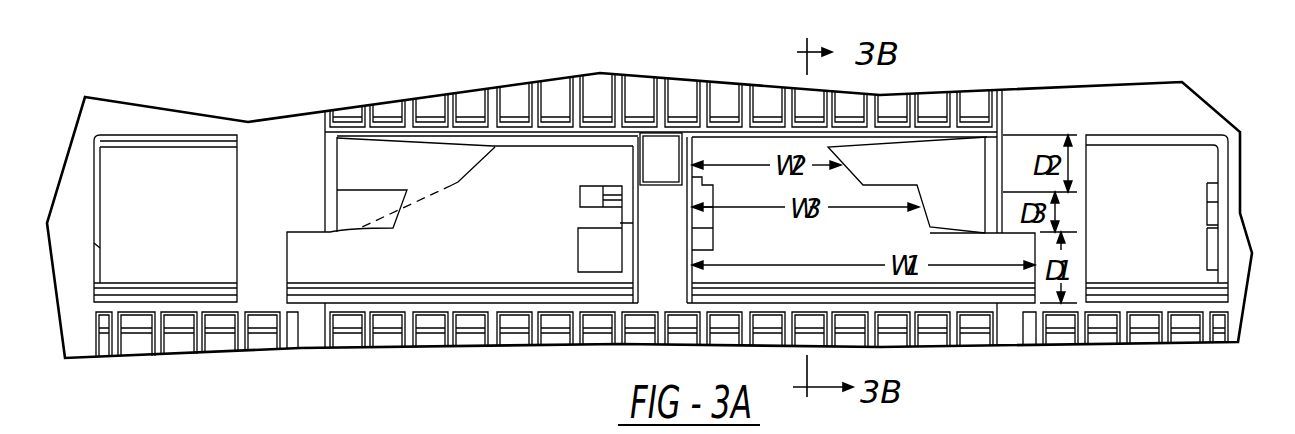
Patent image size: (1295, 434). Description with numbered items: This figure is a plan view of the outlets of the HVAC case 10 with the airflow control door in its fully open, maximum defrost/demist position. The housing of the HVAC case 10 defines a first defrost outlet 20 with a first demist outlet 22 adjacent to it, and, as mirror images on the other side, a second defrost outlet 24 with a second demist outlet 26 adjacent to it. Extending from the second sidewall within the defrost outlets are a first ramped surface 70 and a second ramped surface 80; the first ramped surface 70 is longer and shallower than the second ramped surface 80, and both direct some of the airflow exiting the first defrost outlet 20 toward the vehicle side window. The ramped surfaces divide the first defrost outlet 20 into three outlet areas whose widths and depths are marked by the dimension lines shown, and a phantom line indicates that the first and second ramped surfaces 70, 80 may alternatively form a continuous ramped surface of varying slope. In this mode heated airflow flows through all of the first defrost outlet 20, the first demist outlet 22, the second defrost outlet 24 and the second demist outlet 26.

The HVAC case 10 is at (156, 71).
The first defrost outlet 20 is at (771, 143).
The first demist outlet 22 is at (1170, 147).
The second defrost outlet 24 is at (583, 148).
The second demist outlet 26 is at (177, 146).
The first ramped surface 70 is at (437, 173).
The second ramped surface 80 is at (357, 213).